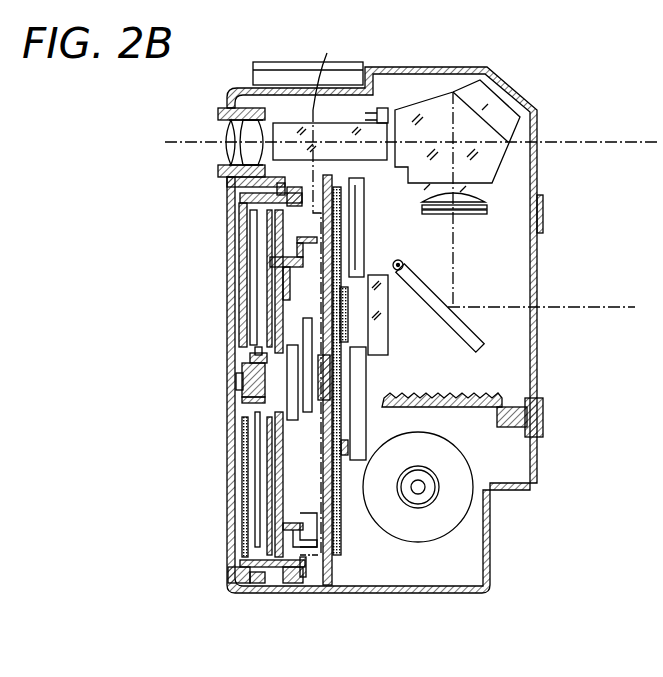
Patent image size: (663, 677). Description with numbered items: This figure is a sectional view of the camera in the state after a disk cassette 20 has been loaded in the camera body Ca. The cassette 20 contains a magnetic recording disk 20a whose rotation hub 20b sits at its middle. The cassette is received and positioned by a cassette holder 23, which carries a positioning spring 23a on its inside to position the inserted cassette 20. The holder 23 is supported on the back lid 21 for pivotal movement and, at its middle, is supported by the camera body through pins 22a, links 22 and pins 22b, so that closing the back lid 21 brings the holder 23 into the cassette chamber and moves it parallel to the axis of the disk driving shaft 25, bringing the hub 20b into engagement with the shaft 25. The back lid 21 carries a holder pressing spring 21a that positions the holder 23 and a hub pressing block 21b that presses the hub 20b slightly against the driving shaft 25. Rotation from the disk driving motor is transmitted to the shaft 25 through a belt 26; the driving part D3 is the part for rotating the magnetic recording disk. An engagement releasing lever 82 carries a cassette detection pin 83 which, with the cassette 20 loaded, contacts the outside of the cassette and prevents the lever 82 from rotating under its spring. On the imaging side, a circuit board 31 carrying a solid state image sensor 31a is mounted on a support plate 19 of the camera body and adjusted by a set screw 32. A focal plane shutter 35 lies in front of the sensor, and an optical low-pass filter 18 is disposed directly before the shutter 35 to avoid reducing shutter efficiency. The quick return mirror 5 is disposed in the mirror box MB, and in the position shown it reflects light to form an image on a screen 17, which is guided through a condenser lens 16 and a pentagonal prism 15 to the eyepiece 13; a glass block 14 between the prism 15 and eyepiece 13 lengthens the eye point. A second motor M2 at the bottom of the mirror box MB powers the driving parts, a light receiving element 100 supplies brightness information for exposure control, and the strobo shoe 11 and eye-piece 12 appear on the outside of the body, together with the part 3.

The strobo shoe 11 is at (293, 63).
The driving part D3 is at (331, 290).
The light receiving element 100 is at (381, 108).
The eye-piece 12 is at (218, 112).
The eyepiece 13 is at (228, 142).
The glass block 14 is at (328, 135).
The pentagonal prism 15 is at (512, 128).
The condenser lens 16 is at (470, 193).
The screen 17 is at (478, 214).
The focal plane shutter 35 is at (365, 190).
The support plate 19 is at (335, 573).
The circuit board 31 is at (342, 420).
The solid state image sensor 31a is at (342, 333).
The optical low-pass filter 18 is at (388, 320).
The quick return mirror 5 is at (482, 333).
The mirror box MB is at (453, 352).
The camera body frame 3 is at (543, 412).
The second motor M2 is at (462, 470).
The set screw 32 is at (348, 447).
The link 22 is at (247, 190).
The back lid 21 is at (228, 345).
The belt 26 is at (297, 328).
The disk driving shaft 25 is at (280, 380).
The hub pressing block 21b is at (240, 376).
The rotation hub 20b is at (250, 408).
The disk cassette 20 is at (260, 412).
The magnetic recording disk 20a is at (260, 448).
The holder pressing spring 21a is at (233, 477).
The positioning spring 23a is at (247, 520).
The cassette holder 23 is at (248, 548).
The pin 22a is at (252, 593).
The pin 22b is at (302, 593).
The engagement releasing lever 82 is at (320, 512).
The cassette detection pin 83 is at (345, 513).
The camera body Ca is at (490, 562).